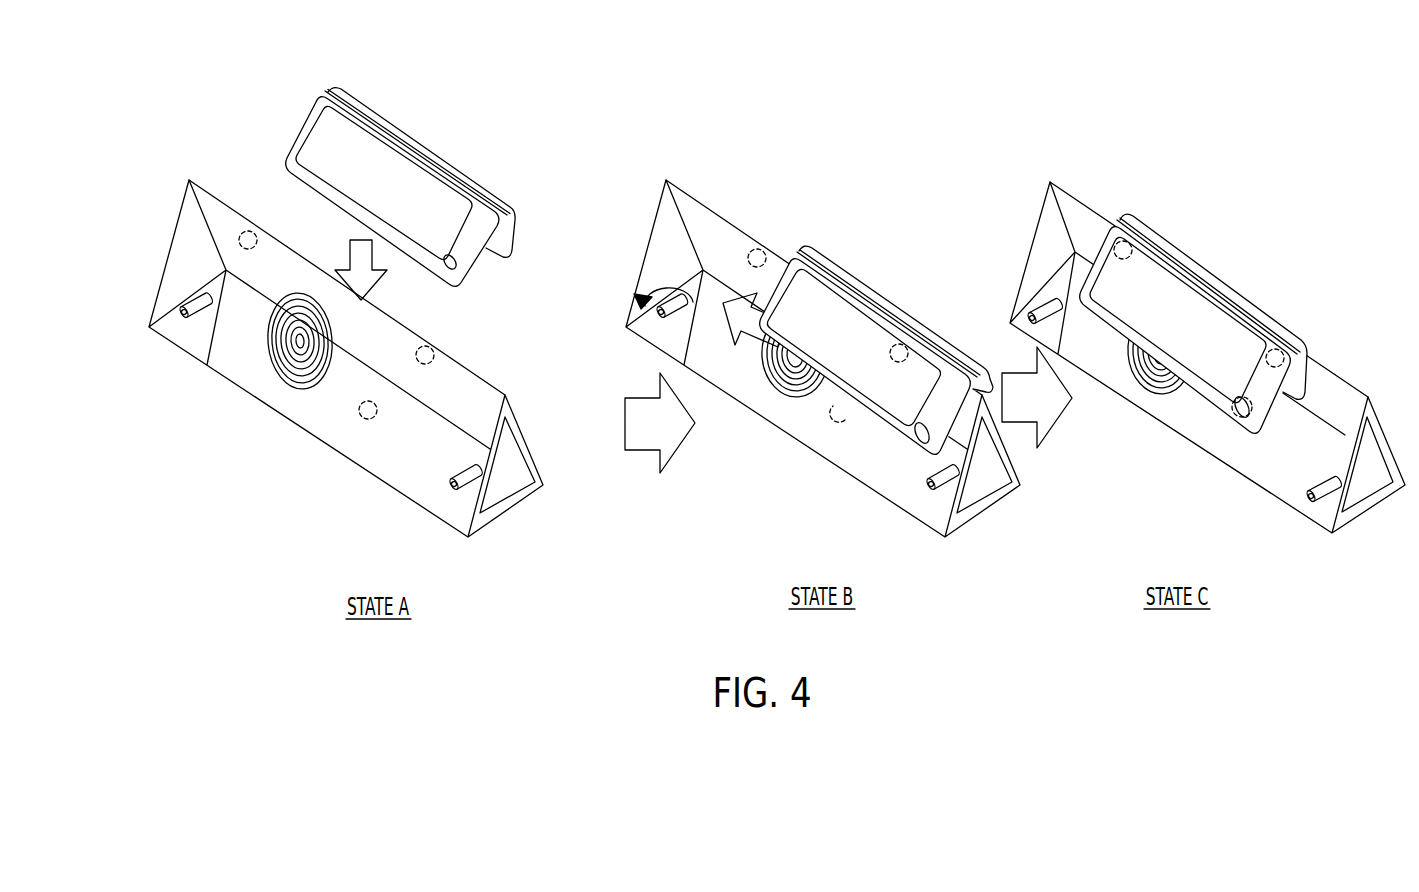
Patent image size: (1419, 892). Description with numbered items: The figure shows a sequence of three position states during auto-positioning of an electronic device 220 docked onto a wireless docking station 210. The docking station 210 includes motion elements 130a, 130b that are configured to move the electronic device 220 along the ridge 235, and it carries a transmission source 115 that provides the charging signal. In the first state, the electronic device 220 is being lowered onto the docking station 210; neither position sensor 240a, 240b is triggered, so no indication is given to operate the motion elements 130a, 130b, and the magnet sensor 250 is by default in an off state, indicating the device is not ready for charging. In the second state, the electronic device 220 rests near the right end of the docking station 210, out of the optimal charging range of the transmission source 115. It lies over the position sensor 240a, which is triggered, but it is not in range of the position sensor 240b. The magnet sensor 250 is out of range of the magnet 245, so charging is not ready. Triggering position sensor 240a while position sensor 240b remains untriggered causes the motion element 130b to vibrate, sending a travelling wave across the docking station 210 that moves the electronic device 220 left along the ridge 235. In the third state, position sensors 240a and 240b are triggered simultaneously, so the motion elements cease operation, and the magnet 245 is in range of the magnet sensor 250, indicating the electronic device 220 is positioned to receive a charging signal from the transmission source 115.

The transmission source 115 is at (301, 392).
The motion element 130a is at (454, 491).
The motion element 130b is at (162, 323).
The docking station 210 is at (199, 188).
The electronic device 220 is at (371, 101).
The ridge 235 is at (219, 197).
The position sensor 240a is at (432, 348).
The position sensor 240b is at (254, 228).
The magnet 245 is at (365, 420).
The magnet sensor 250 is at (457, 266).